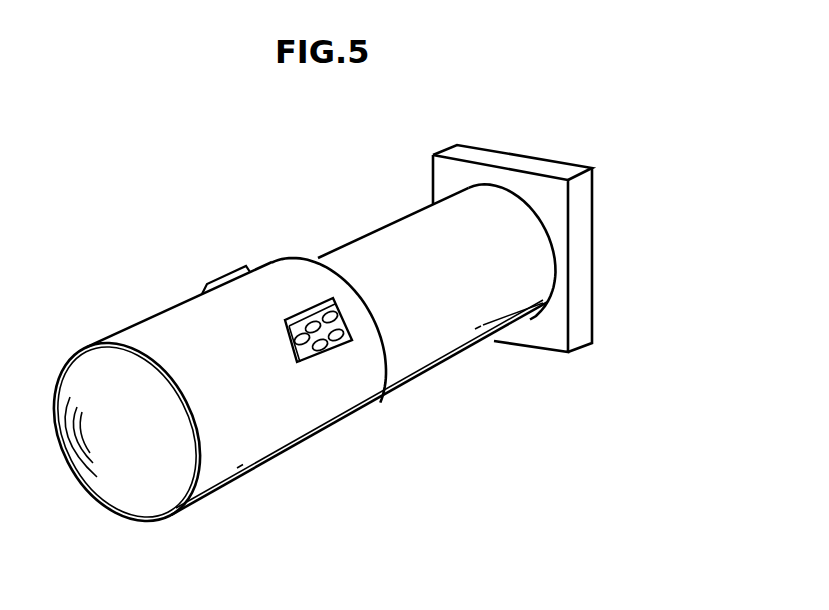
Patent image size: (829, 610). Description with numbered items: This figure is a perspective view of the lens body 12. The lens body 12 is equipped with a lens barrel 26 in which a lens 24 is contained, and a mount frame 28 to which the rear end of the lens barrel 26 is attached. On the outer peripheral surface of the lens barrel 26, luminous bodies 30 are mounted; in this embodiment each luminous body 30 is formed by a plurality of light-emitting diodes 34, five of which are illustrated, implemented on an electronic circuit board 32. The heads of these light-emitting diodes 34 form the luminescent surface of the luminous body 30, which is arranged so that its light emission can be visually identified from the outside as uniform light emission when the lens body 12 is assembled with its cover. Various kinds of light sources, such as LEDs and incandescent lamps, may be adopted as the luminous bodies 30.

The lens body 12 is at (289, 194).
The lens 24 is at (128, 500).
The lens barrel 26 is at (143, 338).
The mount frame 28 is at (586, 240).
The luminous body 30 is at (205, 280).
The electronic circuit board 32 is at (250, 263).
The light-emitting diodes 34 is at (317, 320).